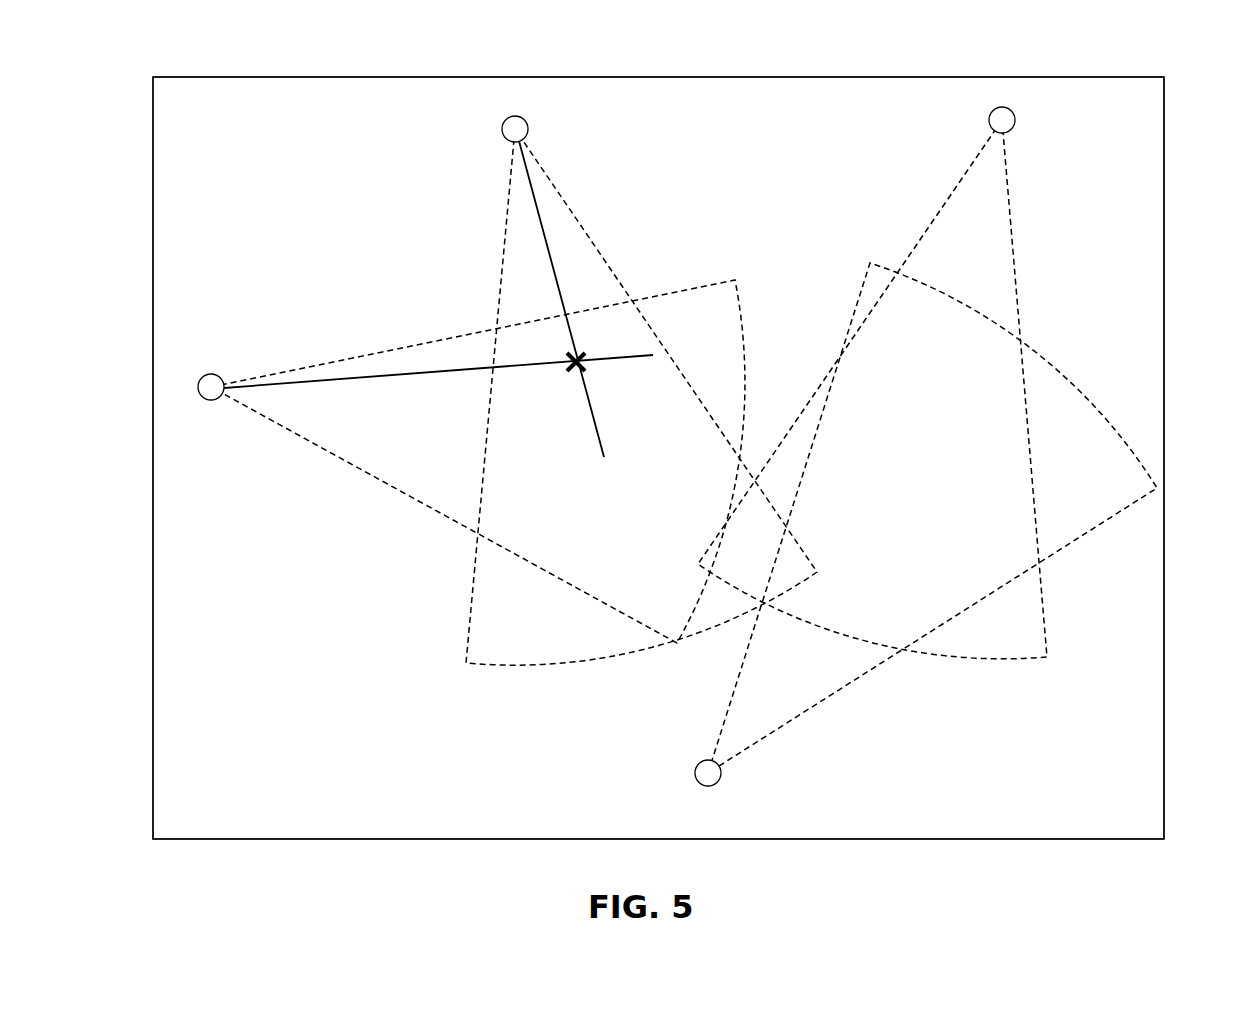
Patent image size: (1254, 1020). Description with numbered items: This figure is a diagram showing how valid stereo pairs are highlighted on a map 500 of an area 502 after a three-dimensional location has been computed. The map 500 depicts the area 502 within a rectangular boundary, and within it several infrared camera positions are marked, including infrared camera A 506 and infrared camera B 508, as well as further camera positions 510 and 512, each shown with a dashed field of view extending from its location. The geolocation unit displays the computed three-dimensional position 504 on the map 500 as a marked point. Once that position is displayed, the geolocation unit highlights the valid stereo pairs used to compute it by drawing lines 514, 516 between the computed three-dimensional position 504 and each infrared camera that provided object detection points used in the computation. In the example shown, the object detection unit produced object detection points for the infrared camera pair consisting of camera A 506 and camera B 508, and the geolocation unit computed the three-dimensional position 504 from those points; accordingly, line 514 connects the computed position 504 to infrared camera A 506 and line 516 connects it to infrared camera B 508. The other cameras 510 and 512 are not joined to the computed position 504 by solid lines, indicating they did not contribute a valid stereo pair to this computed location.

The map 500 is at (688, 68).
The area 502 is at (1150, 650).
The computed 3D position 504 is at (597, 372).
The infrared camera A 506 is at (540, 128).
The infrared camera B 508 is at (198, 382).
The third sensor / node with field of view 510 is at (1023, 118).
The fourth sensor / node with field of view 512 is at (733, 775).
The line 514 is at (570, 272).
The line 516 is at (316, 395).